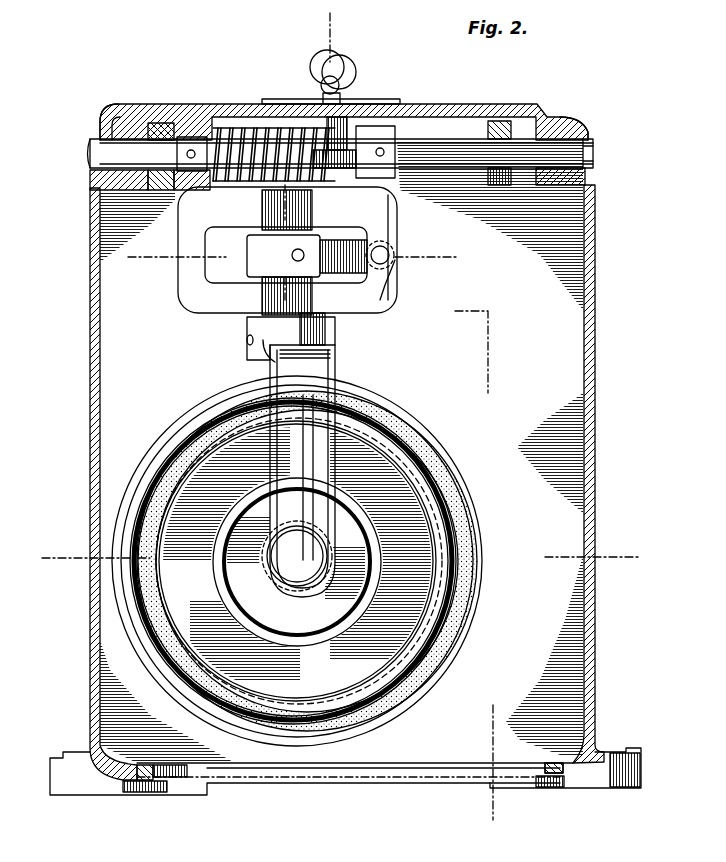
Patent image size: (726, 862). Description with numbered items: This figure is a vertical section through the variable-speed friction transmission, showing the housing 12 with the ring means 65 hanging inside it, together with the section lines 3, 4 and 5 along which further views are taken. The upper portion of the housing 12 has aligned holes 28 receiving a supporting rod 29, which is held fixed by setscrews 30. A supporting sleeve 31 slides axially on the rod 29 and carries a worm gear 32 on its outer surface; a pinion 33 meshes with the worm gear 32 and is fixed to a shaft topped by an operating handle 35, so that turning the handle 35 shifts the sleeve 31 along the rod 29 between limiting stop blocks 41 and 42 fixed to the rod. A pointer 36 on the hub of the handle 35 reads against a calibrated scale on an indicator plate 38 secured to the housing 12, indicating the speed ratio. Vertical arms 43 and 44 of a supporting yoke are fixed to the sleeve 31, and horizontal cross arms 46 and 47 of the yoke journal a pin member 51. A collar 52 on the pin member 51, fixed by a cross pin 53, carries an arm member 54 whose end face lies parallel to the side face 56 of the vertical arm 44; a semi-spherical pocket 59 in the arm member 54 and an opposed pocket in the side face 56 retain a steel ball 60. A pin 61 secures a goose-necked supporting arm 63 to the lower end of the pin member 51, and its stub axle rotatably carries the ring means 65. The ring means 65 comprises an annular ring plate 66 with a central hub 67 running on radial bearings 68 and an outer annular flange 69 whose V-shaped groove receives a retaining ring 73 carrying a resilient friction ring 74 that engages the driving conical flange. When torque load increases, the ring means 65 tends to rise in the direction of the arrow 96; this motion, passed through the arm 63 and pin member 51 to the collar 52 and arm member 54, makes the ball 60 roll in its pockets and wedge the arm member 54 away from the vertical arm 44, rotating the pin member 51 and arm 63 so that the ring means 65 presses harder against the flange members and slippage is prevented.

The section line 3- 3 is at (47, 535).
The section line 4- 4 is at (133, 240).
The section line 5- 5 is at (333, 17).
The housing 12 is at (600, 290).
The aligned holes 28 is at (593, 157).
The supporting rod 29 is at (596, 145).
The setscrews 30 is at (110, 110).
The supporting sleeve 31 is at (402, 105).
The worm gear 32 is at (238, 127).
The pinion 33 is at (386, 151).
The operating handle 35 is at (346, 66).
The pointer 36 is at (328, 90).
The indicator plate 38 is at (372, 98).
The limiting stop block 41 is at (503, 122).
The limiting stop block 42 is at (165, 124).
The vertical arm 43 is at (178, 192).
The vertical arm 44 is at (397, 189).
The cross arm 46 is at (225, 234).
The cross arm 47 is at (215, 302).
The pin member 51 is at (275, 225).
The collar 52 is at (256, 264).
The cross pin 53 is at (296, 254).
The arm member 54 is at (345, 268).
The side face 56 is at (389, 227).
The semi-spherical pocket 59 is at (375, 268).
The ball 60 is at (392, 262).
The pin 61 is at (247, 339).
The supporting arm 63 is at (336, 371).
The ring means 65 is at (392, 490).
The annular ring plate 66 is at (442, 617).
The central hub 67 is at (290, 626).
The radial bearings 68 is at (262, 588).
The outer annular flange 69 is at (168, 420).
The retaining ring 73 is at (482, 524).
The friction ring 74 is at (466, 494).
The arrow 96 is at (283, 451).